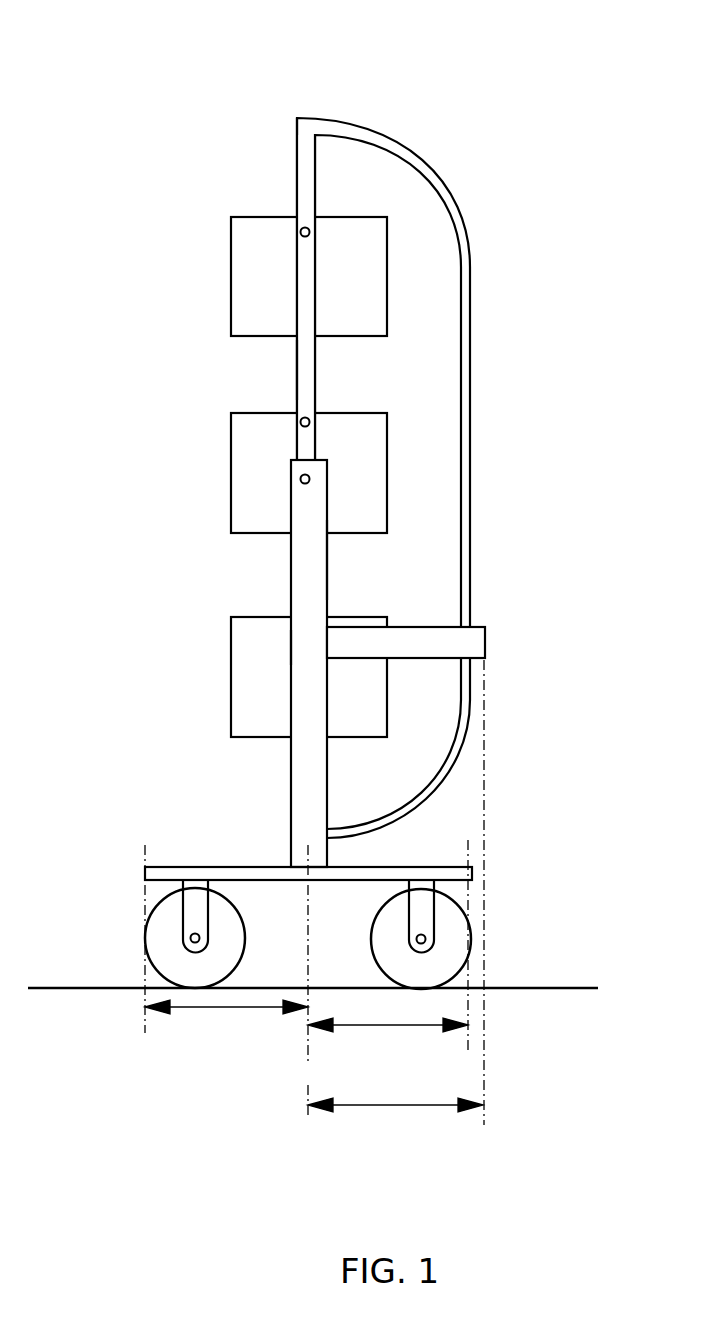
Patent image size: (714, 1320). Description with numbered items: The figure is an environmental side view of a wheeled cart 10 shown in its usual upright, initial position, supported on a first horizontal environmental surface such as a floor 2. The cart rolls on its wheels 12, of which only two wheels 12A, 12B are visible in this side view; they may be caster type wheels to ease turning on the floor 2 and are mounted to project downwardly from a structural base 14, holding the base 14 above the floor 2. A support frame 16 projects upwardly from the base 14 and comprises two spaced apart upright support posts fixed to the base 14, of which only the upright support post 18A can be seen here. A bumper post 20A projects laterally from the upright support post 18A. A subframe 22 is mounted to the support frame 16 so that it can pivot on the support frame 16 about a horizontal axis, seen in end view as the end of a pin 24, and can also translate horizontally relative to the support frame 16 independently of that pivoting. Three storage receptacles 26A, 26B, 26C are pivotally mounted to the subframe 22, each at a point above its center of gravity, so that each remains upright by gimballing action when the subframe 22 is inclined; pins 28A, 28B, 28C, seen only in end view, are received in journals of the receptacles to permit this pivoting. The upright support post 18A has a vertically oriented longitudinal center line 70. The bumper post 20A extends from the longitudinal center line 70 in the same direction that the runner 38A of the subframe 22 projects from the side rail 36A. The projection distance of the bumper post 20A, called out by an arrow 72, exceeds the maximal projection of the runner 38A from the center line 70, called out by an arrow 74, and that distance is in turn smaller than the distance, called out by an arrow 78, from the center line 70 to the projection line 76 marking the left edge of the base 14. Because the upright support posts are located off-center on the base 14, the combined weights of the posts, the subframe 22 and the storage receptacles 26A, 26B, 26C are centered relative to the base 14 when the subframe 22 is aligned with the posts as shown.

The wheeled cart 10 is at (418, 74).
The floor 2 is at (98, 988).
The wheels 12 is at (305, 931).
The wheel 12A is at (150, 926).
The wheel 12B is at (466, 930).
The structural base 14 is at (265, 866).
The support frame 16 is at (289, 580).
The upright support post 18A is at (327, 560).
The bumper post 20A is at (470, 640).
The subframe 22 is at (277, 182).
The pin 24 is at (300, 479).
The storage receptacle 26A is at (230, 680).
The storage receptacle 26B is at (388, 428).
The storage receptacle 26C is at (229, 273).
The pin 28A is at (287, 647).
The pin 28B is at (308, 418).
The pin 28C is at (308, 228).
The side rail 36A is at (297, 372).
The runner 38A is at (472, 255).
The longitudinal center line 70 is at (308, 1108).
The arrow 72 is at (375, 1108).
The arrow 74 is at (373, 1035).
The projection line 76 is at (140, 1022).
The arrow 78 is at (215, 1013).